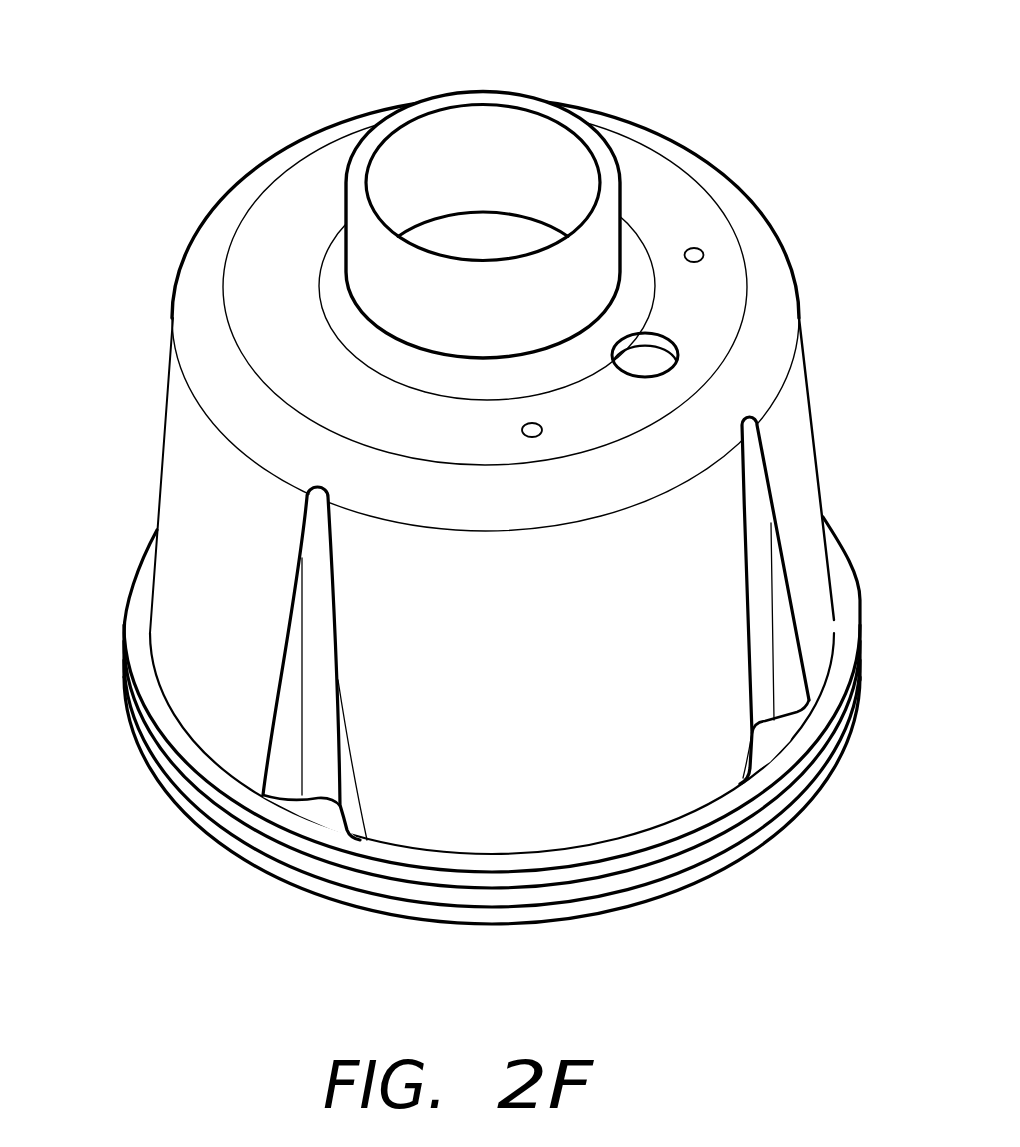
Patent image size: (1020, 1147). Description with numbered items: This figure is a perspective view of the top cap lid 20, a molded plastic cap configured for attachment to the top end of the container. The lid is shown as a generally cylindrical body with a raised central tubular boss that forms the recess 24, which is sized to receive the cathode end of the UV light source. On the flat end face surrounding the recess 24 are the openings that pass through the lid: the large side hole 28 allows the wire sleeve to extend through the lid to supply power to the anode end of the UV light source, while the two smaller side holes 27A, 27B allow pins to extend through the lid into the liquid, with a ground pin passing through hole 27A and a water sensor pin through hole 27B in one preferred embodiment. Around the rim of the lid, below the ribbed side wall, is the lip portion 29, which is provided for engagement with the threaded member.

The top cap lid 20 is at (485, 462).
The recess 24 is at (487, 160).
The side hole 27A is at (542, 428).
The side hole 27B is at (700, 247).
The large side hole 28 is at (642, 363).
The lip portion 29 is at (230, 820).